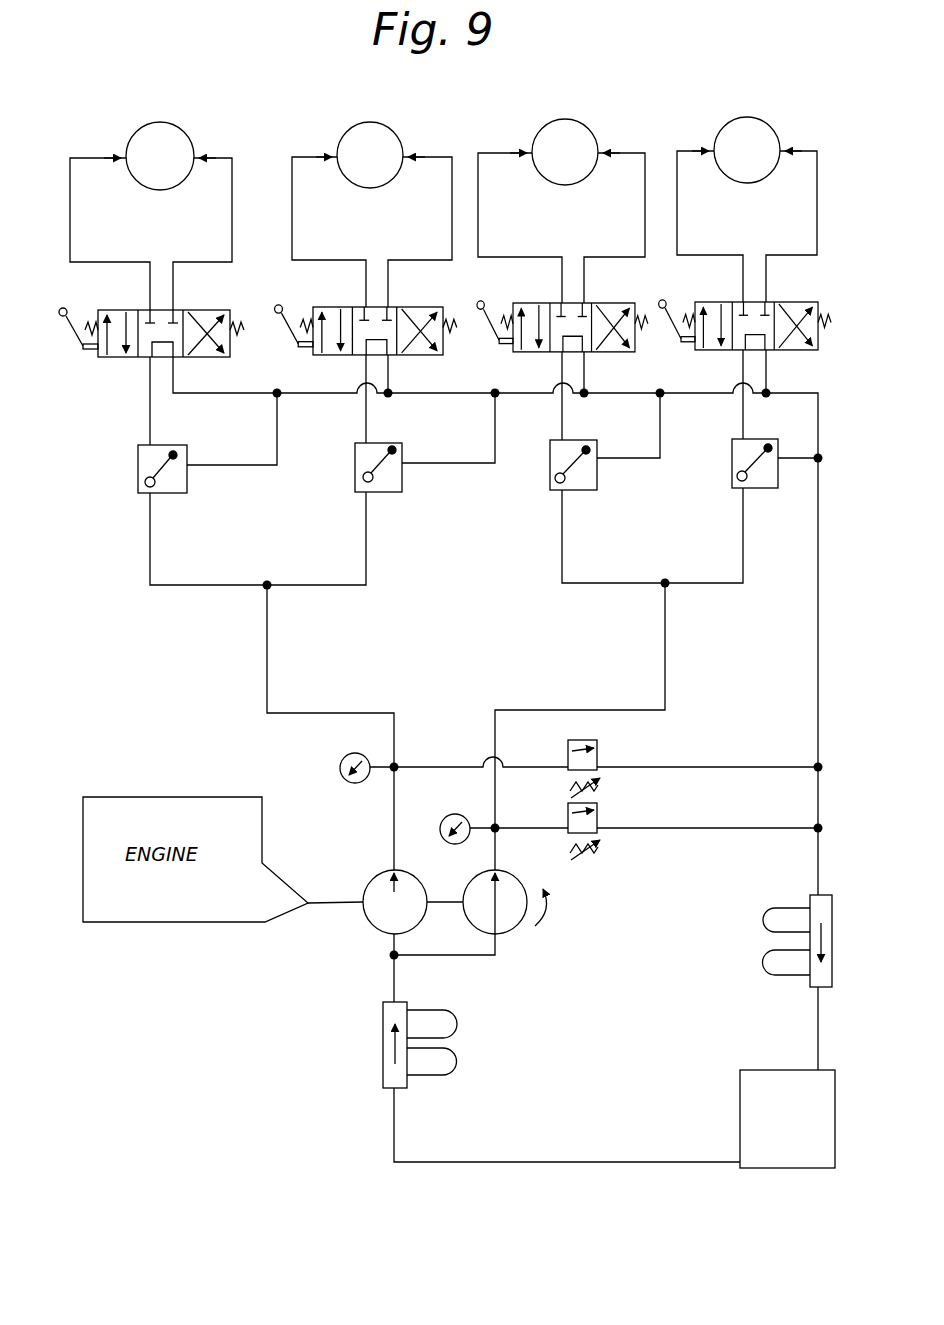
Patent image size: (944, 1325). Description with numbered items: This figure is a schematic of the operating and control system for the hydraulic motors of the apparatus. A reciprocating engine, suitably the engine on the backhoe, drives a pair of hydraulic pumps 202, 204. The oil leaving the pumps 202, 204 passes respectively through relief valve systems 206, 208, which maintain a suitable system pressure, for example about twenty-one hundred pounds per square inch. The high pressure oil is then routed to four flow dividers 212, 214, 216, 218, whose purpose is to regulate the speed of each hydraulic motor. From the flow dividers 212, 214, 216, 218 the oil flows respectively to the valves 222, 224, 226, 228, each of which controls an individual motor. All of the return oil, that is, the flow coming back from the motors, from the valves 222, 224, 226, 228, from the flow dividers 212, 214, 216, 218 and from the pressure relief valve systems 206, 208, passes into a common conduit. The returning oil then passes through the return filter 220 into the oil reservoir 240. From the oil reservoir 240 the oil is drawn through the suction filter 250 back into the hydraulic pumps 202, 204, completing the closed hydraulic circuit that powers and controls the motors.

The hydraulic pump 202 is at (375, 922).
The hydraulic pump 204 is at (485, 922).
The relief valve system 206 is at (568, 746).
The relief valve system 208 is at (568, 810).
The flow divider 212 is at (138, 450).
The flow divider 214 is at (355, 466).
The flow divider 216 is at (550, 472).
The flow divider 218 is at (735, 465).
The return filter 220 is at (812, 898).
The valve 222 is at (180, 310).
The valve 224 is at (395, 307).
The valve 226 is at (595, 303).
The valve 228 is at (770, 302).
The oil reservoir 240 is at (767, 1076).
The suction filter 250 is at (383, 1025).